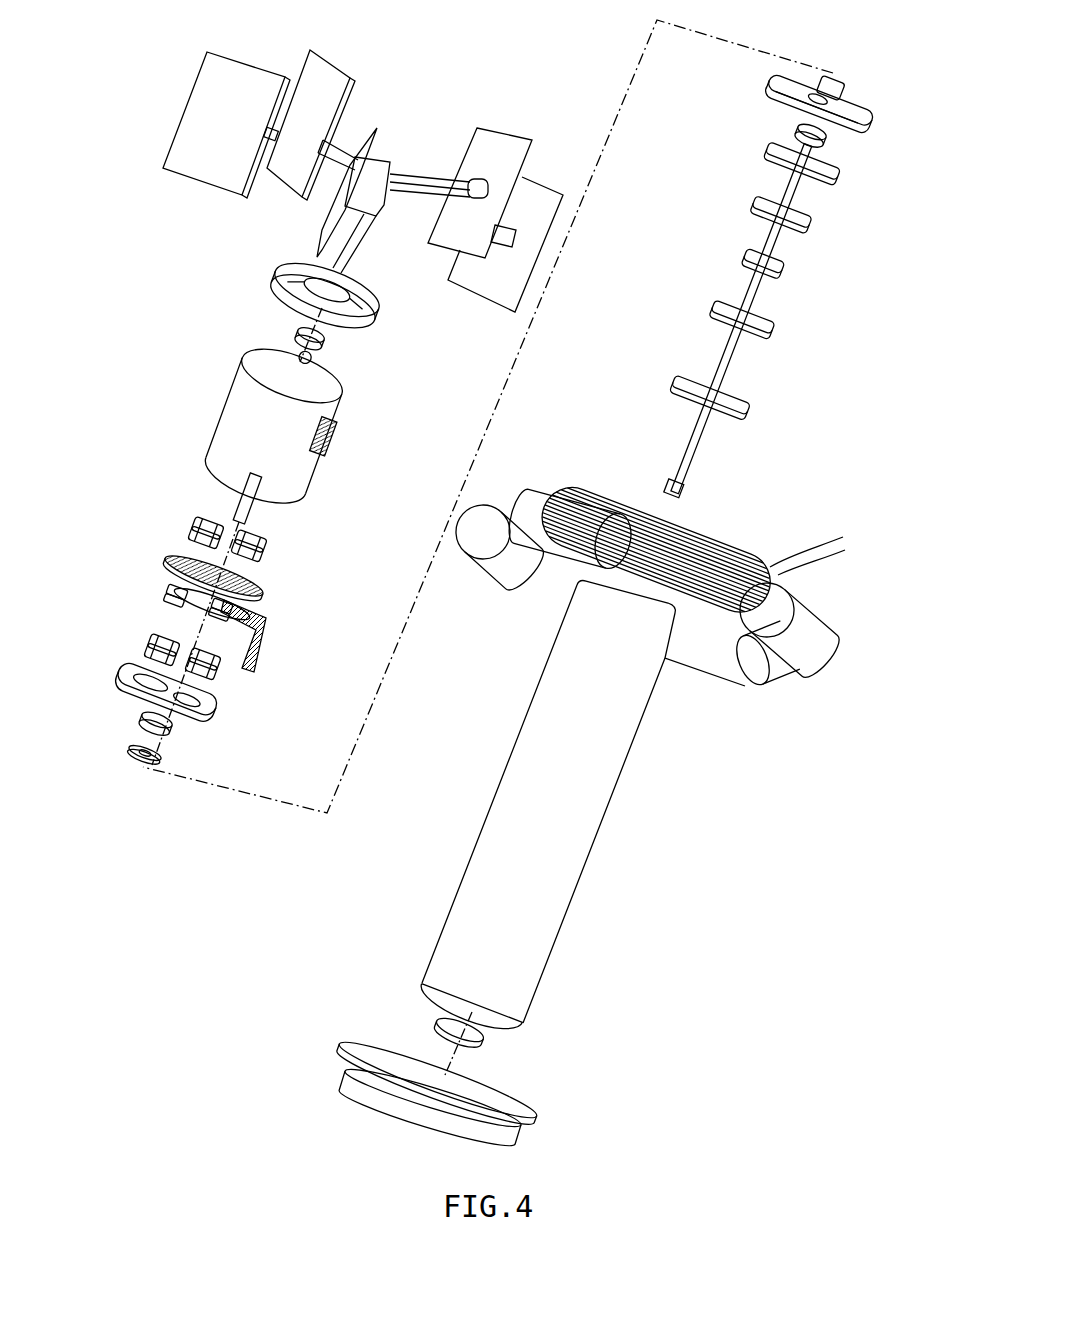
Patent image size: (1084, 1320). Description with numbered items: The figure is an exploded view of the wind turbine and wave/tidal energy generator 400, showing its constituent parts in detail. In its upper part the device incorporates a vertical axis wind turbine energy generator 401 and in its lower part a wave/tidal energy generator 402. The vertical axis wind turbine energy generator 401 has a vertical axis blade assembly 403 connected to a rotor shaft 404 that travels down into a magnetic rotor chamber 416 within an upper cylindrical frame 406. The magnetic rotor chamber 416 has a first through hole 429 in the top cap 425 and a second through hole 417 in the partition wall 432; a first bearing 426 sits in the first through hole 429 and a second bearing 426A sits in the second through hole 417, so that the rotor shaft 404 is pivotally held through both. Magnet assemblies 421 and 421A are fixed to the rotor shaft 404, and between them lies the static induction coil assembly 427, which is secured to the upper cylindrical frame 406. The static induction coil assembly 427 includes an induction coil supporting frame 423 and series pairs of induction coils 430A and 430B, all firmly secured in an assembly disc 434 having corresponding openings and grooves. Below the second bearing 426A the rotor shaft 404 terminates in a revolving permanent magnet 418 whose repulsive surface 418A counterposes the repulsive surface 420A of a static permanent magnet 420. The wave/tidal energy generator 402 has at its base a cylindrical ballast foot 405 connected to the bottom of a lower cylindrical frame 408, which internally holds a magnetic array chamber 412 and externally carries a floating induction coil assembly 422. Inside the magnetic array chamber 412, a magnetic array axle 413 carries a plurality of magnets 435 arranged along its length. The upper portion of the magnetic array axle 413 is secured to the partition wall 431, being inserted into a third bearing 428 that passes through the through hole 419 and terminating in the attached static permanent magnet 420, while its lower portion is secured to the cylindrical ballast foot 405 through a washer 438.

The wind turbine and wave/tidal energy generator 400 is at (220, 1029).
The vertical axis wind turbine energy generator 401 is at (145, 375).
The wave/tidal energy generator 402 is at (815, 771).
The vertical axis blade assembly 403 is at (398, 150).
The rotor shaft 404 is at (240, 497).
The cylindrical ballast foot 405 is at (477, 1112).
The upper cylindrical frame 406 is at (262, 420).
The lower cylindrical frame 408 is at (570, 803).
The magnetic array chamber 412 is at (756, 320).
The magnetic array axle 413 is at (782, 238).
The magnetic rotor chamber 416 is at (362, 414).
The second through hole 417 is at (165, 700).
The revolving permanent magnet 418 is at (140, 752).
The repulsive surface 418A is at (143, 758).
The through hole 419 is at (787, 105).
The static permanent magnet 420 is at (840, 88).
The repulsive surface 420A is at (848, 95).
The magnet assembly 421 is at (280, 559).
The magnet assembly 421A is at (236, 678).
The floating induction coil assembly 422 is at (824, 588).
The induction coil supporting frame 423 is at (195, 607).
The top cap 425 is at (295, 273).
The first bearing 426 is at (297, 335).
The second bearing 426A is at (165, 718).
The static induction coil assembly 427 is at (275, 613).
The third bearing 428 is at (833, 133).
The first through hole 429 is at (310, 297).
The induction coil 430A is at (173, 588).
The induction coil 430B is at (262, 625).
The partition wall 431 is at (870, 113).
The partition wall 432 is at (203, 700).
The assembly disc 434 is at (173, 560).
The magnets 435 is at (675, 380).
The washer 438 is at (485, 1035).